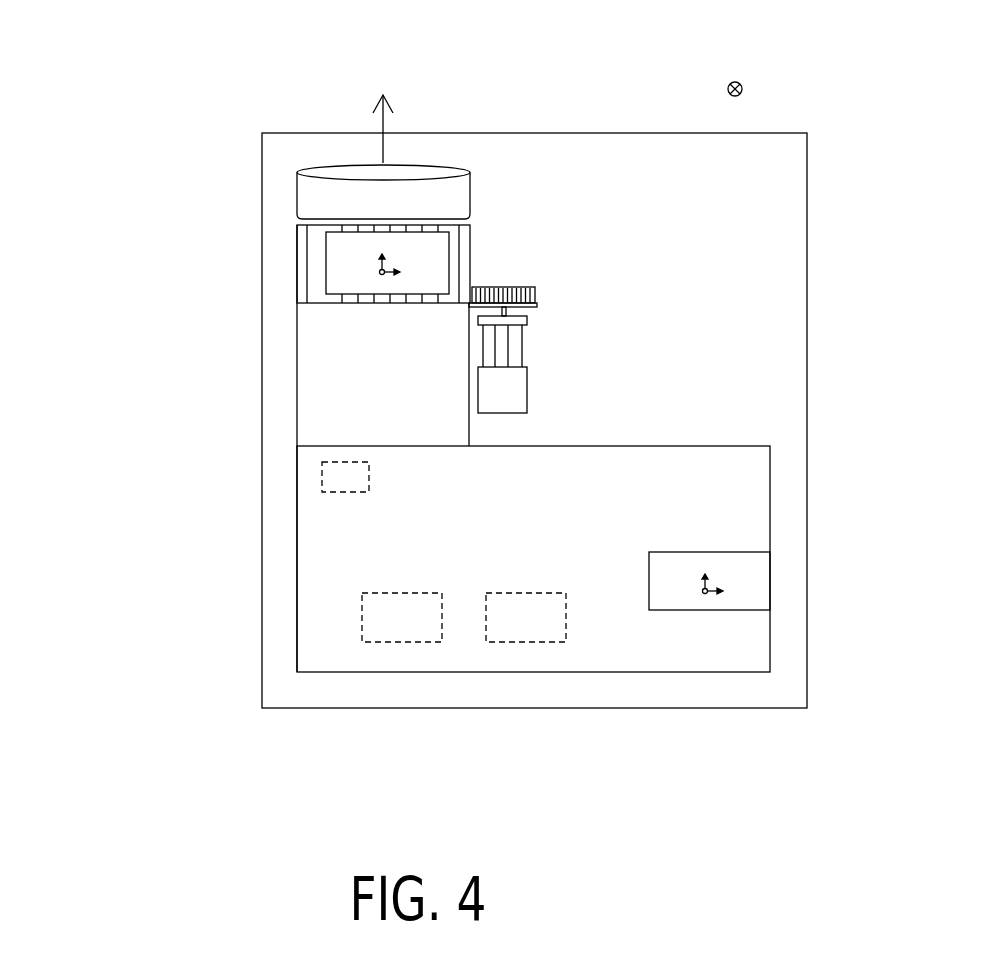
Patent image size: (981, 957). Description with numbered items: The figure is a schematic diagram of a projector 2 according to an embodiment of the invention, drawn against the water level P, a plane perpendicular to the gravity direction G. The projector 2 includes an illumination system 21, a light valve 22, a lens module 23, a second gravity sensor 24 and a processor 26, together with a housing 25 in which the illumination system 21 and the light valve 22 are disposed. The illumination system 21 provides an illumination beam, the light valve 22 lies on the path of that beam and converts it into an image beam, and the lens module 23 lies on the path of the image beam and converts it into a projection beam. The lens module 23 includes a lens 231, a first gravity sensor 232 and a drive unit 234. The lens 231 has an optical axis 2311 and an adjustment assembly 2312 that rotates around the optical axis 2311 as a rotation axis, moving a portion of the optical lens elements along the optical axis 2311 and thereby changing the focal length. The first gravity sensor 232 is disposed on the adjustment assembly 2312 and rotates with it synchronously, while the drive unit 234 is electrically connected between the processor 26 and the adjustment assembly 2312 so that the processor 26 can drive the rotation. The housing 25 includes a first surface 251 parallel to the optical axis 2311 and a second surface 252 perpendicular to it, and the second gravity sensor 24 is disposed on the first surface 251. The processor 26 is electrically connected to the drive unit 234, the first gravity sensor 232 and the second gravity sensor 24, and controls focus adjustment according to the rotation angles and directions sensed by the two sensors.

The projector 2 is at (112, 85).
The water level P is at (590, 158).
The gravity direction G is at (743, 92).
The lens module 23 is at (95, 165).
The lens 231 is at (172, 130).
The optical axis 2311 is at (382, 143).
The adjustment assembly 2312 is at (303, 246).
The first gravity sensor 232 is at (355, 262).
The drive unit 234 is at (488, 377).
The housing 25 is at (165, 473).
The first surface 251 is at (345, 535).
The second surface 252 is at (297, 575).
The processor 26 is at (322, 478).
The light valve 22 is at (402, 642).
The illumination system 21 is at (527, 642).
The second gravity sensor 24 is at (667, 593).